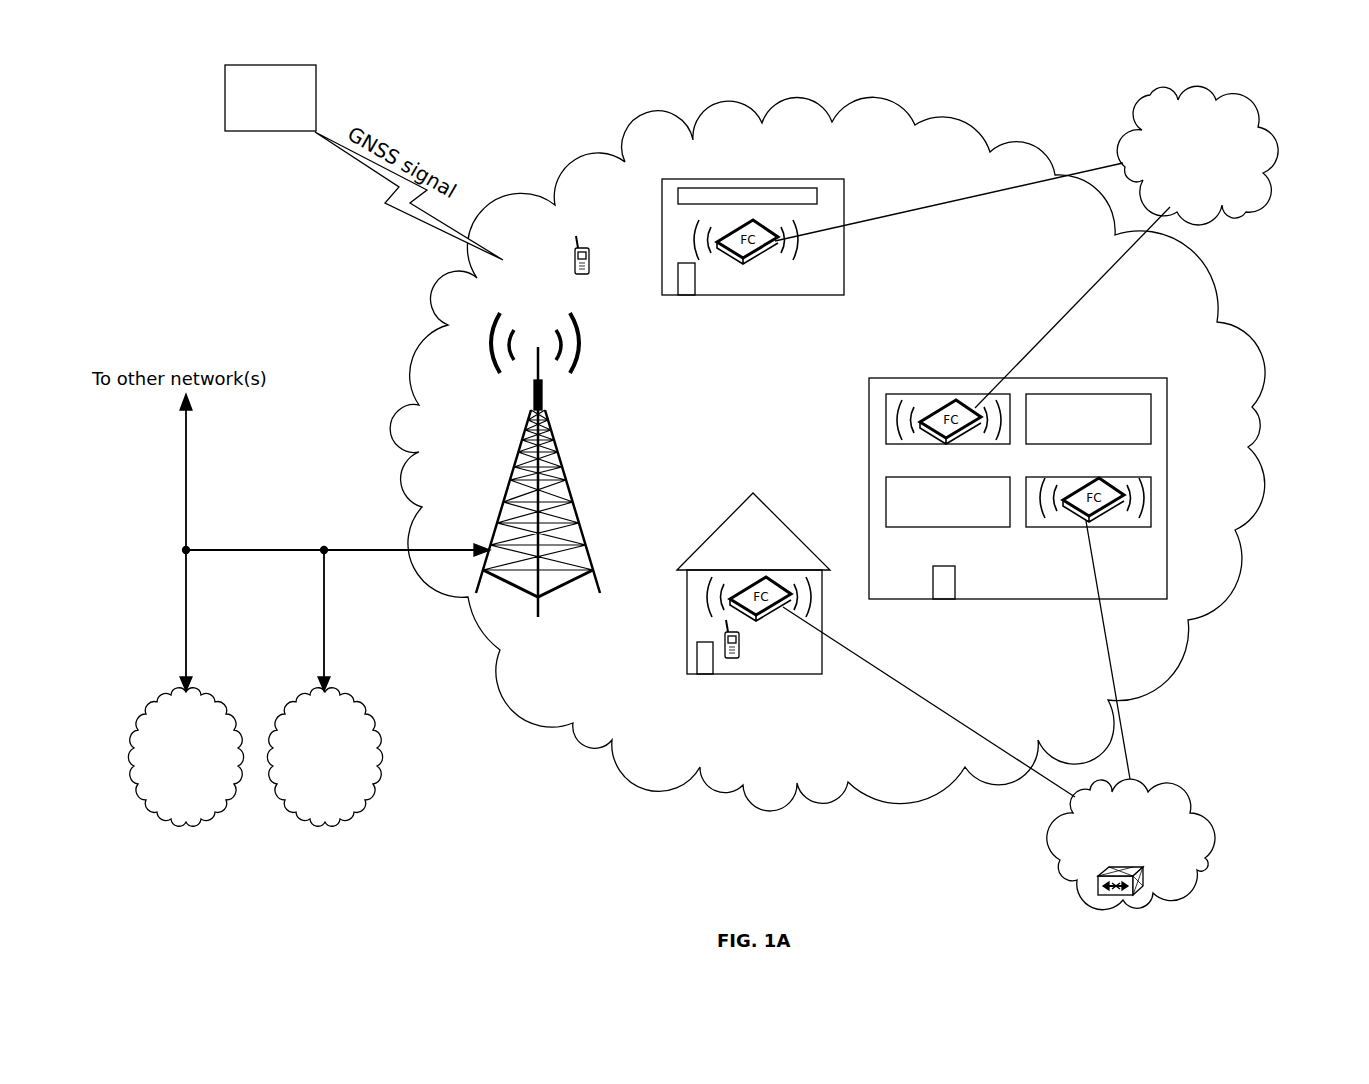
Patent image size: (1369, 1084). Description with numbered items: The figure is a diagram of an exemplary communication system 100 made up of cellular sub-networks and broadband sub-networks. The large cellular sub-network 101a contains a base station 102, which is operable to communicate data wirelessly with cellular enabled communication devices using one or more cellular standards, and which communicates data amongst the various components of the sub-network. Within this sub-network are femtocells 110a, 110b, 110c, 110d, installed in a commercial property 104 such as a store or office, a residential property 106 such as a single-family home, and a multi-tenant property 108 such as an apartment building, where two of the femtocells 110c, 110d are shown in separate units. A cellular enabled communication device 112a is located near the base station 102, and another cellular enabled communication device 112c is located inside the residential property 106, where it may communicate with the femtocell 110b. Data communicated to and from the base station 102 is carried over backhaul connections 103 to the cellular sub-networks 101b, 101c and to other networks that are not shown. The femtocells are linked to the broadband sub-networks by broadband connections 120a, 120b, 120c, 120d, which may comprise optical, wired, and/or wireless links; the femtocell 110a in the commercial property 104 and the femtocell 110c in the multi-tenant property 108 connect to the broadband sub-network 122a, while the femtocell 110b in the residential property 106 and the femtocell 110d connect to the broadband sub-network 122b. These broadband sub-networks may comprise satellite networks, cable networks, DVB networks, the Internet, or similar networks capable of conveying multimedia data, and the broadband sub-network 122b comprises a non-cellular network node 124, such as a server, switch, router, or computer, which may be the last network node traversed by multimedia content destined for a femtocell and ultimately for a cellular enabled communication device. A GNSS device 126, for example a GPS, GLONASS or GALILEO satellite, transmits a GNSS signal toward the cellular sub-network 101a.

The communication system 100 is at (160, 136).
The cellular sub-network 101a is at (590, 150).
The cellular sub-network 101b is at (186, 823).
The cellular sub-network 101c is at (325, 823).
The base station 102 is at (552, 437).
The backhaul connections 103 is at (258, 550).
The commercial properties 104 is at (753, 220).
The residential properties 106 is at (753, 597).
The multi-tenant properties 108 is at (1044, 488).
The femtocell 110a is at (757, 256).
The femtocell 110b is at (762, 616).
The femtocell 110c is at (958, 438).
The femtocell 110d is at (1105, 516).
The cellular enabled communication device 112a is at (590, 245).
The cellular enabled communication device 112c is at (738, 666).
The broadband connection 120a is at (910, 212).
The broadband connection 120b is at (868, 667).
The broadband connection 120c is at (1045, 335).
The broadband connection 120d is at (1106, 648).
The broadband sub-network 122a is at (1262, 197).
The broadband sub-network 122b is at (1152, 852).
The non-cellular network node 124 is at (1098, 892).
The GNSS device 126 is at (258, 132).